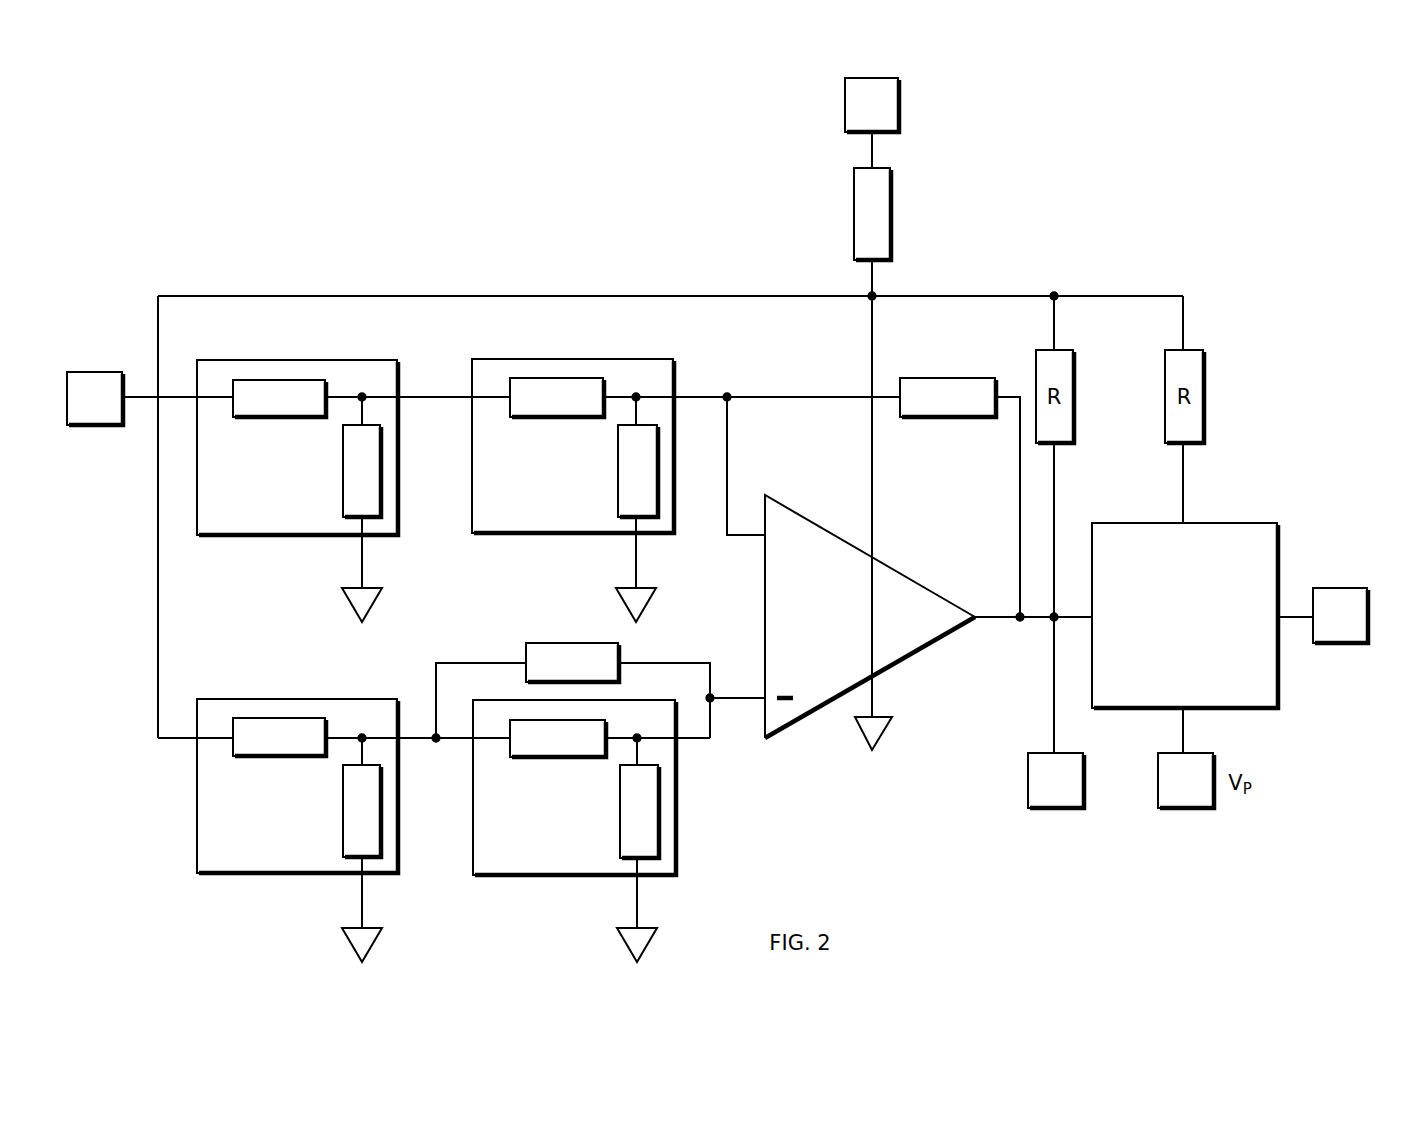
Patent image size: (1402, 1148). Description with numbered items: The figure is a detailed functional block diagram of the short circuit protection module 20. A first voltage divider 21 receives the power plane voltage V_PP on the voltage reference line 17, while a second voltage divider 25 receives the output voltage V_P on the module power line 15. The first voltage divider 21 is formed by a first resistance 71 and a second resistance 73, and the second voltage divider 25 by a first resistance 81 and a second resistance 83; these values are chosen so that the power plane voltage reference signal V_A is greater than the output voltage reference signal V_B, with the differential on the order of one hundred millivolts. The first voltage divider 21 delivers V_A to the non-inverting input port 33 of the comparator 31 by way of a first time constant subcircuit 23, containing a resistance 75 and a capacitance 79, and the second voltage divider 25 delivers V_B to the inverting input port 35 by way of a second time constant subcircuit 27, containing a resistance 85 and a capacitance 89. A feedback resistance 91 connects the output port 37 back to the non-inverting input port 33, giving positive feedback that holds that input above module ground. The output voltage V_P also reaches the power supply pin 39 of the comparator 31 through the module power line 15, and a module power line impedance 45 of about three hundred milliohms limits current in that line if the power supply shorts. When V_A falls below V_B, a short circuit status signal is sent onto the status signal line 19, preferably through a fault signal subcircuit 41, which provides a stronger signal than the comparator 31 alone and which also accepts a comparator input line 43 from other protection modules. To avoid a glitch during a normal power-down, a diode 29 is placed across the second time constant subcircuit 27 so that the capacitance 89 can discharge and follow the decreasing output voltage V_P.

The module power line 15 is at (875, 281).
The voltage reference line 17 is at (144, 390).
The status signal line 19 is at (1293, 613).
The short circuit protection module 20 is at (448, 218).
The first voltage divider 21 is at (322, 469).
The first time constant subcircuit 23 is at (595, 469).
The second voltage divider 25 is at (322, 809).
The second time constant subcircuit 27 is at (599, 831).
The diode 29 is at (546, 643).
The comparator 31 is at (918, 648).
The non-inverting input port 33 is at (765, 541).
The inverting input port 35 is at (765, 698).
The output port 37 is at (978, 624).
The power supply pin 39 is at (878, 558).
The fault signal subcircuit 41 is at (1147, 523).
The comparator input line 43 is at (1053, 715).
The module power line impedance 45 is at (893, 187).
The first resistance 71 is at (280, 380).
The second resistance 73 is at (383, 491).
The resistor R of time constant A 75 is at (556, 378).
The capacitor C of time constant A 79 is at (657, 491).
The first resistance 81 is at (280, 718).
The second resistance 83 is at (383, 831).
The resistor R of time constant B 85 is at (547, 760).
The capacitance 89 is at (658, 831).
The feedback resistance 91 is at (945, 378).